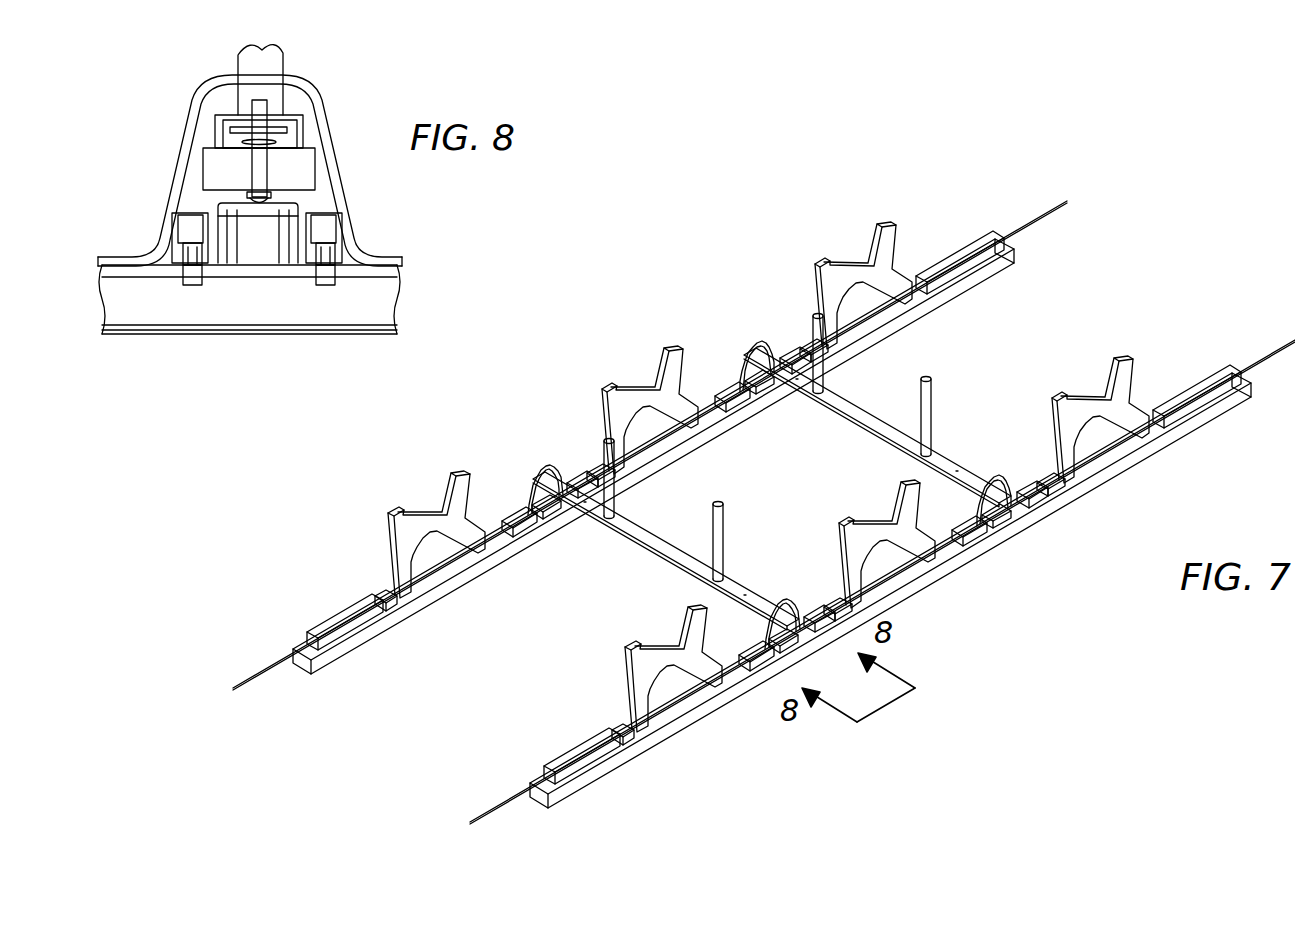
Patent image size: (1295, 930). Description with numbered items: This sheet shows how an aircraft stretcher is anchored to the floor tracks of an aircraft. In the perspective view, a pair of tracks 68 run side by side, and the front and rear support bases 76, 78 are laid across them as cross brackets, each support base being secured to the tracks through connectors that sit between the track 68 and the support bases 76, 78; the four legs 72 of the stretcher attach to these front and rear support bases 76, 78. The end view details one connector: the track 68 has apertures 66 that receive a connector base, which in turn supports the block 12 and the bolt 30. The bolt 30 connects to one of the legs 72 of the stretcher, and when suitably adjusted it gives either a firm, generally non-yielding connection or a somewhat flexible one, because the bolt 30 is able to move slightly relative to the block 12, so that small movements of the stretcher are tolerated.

In FIG. 7, the block 12 is at (768, 477).
In FIG. 8, the block 12 is at (297, 210).
In FIG. 8, the bolt 30 is at (263, 172).
In FIG. 8, the apertures 66 is at (318, 270).
In FIG. 7, the track 68 is at (655, 748).
In FIG. 8, the track 68 is at (385, 302).
In FIG. 8, the legs 72 is at (272, 58).
In FIG. 7, the front support base 76 is at (645, 530).
In FIG. 7, the rear support base 78 is at (850, 408).